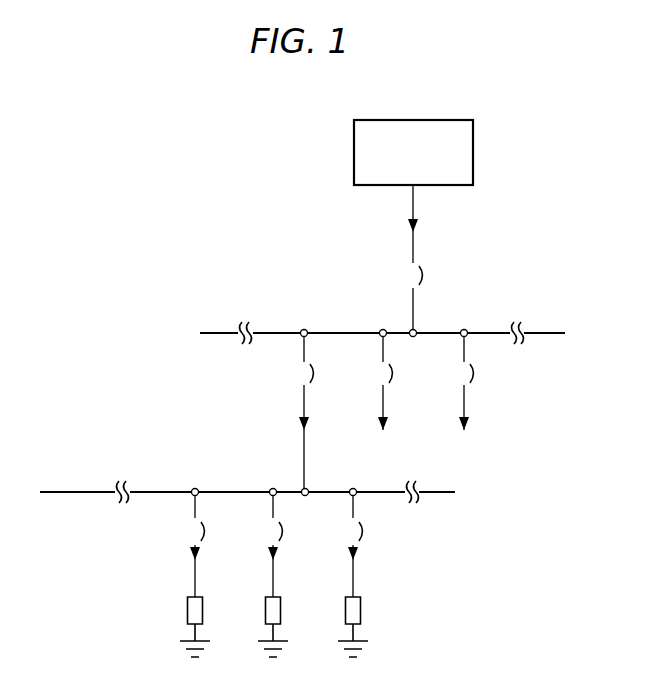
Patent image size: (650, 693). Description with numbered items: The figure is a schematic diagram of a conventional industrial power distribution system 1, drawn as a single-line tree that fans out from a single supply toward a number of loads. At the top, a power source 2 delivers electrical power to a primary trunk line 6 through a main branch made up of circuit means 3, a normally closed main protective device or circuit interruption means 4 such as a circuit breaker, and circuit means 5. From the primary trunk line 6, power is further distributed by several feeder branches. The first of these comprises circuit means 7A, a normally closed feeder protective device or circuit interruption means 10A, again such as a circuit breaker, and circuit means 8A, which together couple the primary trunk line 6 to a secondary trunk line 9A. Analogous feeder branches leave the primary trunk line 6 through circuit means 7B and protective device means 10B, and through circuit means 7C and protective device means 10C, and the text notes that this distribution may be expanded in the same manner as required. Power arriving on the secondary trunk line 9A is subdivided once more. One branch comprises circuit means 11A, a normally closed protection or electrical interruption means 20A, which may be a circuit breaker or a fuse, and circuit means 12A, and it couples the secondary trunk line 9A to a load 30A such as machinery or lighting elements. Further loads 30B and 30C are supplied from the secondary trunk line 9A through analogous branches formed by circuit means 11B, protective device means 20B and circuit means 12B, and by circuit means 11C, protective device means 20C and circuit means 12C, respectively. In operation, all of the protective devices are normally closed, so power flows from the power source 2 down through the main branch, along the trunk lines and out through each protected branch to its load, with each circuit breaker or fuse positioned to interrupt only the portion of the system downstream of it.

The power distribution system 1 is at (503, 241).
The power source 2 is at (473, 165).
The circuit means 3 is at (413, 244).
The main protective device means or circuit interruption means 4 is at (426, 277).
The circuit means 5 is at (413, 307).
The primary trunk line 6 is at (345, 333).
The circuit means 7A is at (304, 353).
The circuit means 7B is at (383, 351).
The circuit means 7C is at (464, 351).
The circuit means 8A is at (304, 447).
The secondary trunk line 9A is at (233, 492).
The feeder protective device means or circuit interruption means 10A is at (316, 377).
The protective device means 10B is at (395, 377).
The protective device means 10C is at (476, 377).
The circuit means 11A is at (195, 511).
The circuit means 11B is at (273, 511).
The circuit means 11C is at (353, 511).
The circuit means 12A is at (195, 578).
The circuit means 12B is at (273, 578).
The circuit means 12C is at (353, 578).
The protection or electrical interruption means 20A is at (207, 536).
The protective device means 20B is at (285, 536).
The protective device means 20C is at (365, 536).
The load 30A is at (203, 610).
The load 30B is at (281, 610).
The load 30C is at (361, 610).